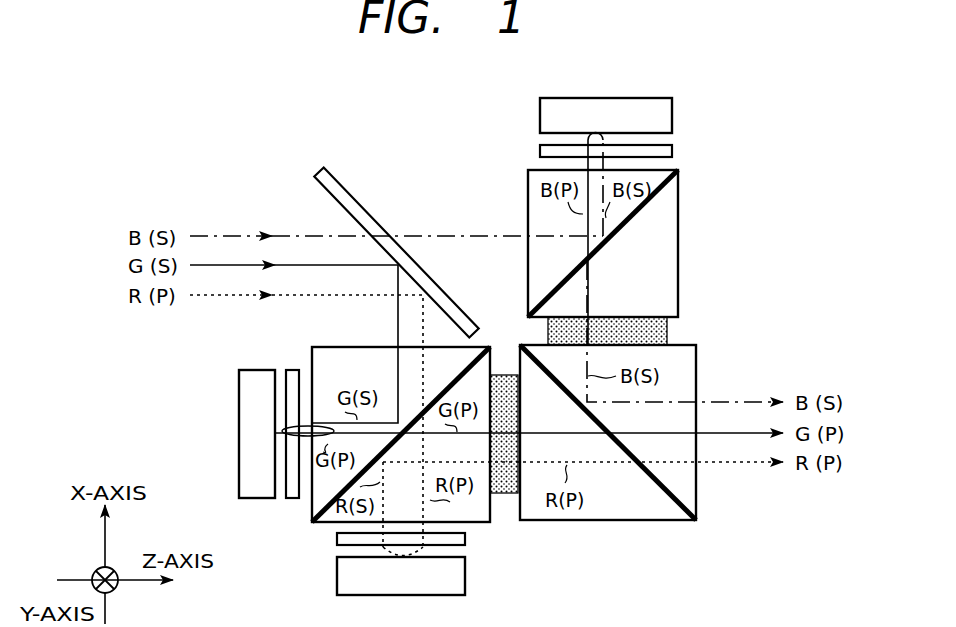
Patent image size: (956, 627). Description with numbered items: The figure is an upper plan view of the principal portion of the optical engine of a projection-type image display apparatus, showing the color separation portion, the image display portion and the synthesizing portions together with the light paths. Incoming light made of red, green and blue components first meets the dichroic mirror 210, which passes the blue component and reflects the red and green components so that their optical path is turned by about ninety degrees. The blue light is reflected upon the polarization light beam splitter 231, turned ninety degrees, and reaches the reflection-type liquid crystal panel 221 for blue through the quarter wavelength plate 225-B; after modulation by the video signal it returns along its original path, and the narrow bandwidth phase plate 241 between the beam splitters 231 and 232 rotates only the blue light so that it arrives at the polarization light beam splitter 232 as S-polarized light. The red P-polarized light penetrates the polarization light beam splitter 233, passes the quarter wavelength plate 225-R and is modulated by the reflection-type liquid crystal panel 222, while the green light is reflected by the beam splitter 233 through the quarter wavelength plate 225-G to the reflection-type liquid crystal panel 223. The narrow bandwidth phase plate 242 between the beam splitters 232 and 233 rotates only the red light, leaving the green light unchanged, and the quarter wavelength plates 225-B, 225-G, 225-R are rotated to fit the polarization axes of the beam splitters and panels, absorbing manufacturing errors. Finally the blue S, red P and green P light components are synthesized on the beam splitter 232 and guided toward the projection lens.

The dichroic mirror 210 is at (316, 166).
The reflection-type liquid crystal panel for blue color 221 is at (672, 115).
The reflection-type liquid crystal panel for red color 222 is at (465, 578).
The reflection-type liquid crystal panel for green color 223 is at (239, 389).
The 1/4 wavelength plate 225-B is at (672, 153).
The 1/4 wavelength plate 225-G is at (293, 500).
The 1/4 wavelength plate 225-R is at (465, 540).
The polarization light beam splitter 231 is at (568, 260).
The polarization light beam splitter 232 is at (677, 475).
The polarization light beam splitter 233 is at (473, 380).
The narrow bandwidth phase plate 241 is at (667, 330).
The narrow bandwidth phase plate 242 is at (500, 375).